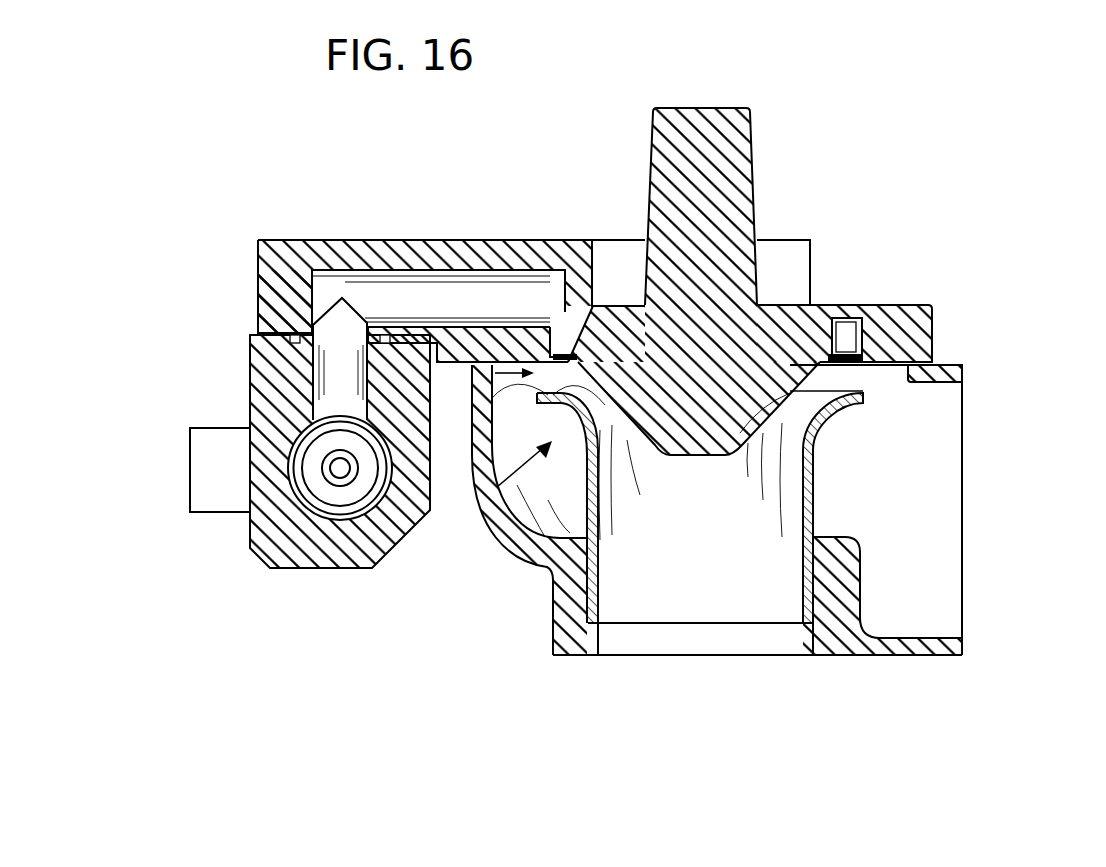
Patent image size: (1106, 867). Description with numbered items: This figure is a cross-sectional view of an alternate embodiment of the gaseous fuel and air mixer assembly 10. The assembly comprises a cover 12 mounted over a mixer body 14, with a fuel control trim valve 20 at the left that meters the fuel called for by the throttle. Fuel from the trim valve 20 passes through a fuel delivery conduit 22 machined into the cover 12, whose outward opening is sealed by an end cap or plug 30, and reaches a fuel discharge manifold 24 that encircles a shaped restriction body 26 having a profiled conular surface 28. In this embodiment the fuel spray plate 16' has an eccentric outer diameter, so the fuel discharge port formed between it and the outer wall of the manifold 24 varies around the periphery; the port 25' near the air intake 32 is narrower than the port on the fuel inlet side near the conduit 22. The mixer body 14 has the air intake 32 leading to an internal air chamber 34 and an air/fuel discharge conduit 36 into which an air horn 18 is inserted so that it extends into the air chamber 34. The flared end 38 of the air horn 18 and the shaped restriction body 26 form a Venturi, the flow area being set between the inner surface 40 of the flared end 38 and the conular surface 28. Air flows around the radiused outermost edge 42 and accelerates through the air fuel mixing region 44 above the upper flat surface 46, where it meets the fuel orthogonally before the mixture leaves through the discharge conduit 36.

The mixer assembly 10 is at (987, 183).
The cover 12 is at (932, 330).
The mixer body 14 is at (853, 656).
The fuel spray plate 16' is at (918, 390).
The air horn 18 is at (815, 480).
The fuel control trim valve 20 is at (305, 432).
The fuel delivery conduit 22 is at (430, 285).
The fuel discharge manifold 24 is at (565, 343).
The fuel discharge port 25' is at (886, 320).
The shaped restriction body 26 is at (737, 372).
The profiled conular surface 28 is at (812, 427).
The end cap or plug 30 is at (258, 295).
The air intake 32 is at (935, 572).
The internal air chamber 34 is at (518, 545).
The air/fuel discharge conduit 36 is at (652, 623).
The flared end 38 is at (478, 512).
The inner surface 40 is at (607, 428).
The outermost edge 42 is at (472, 443).
The air fuel mixing region 44 is at (480, 355).
The upper flat surface 46 is at (472, 419).